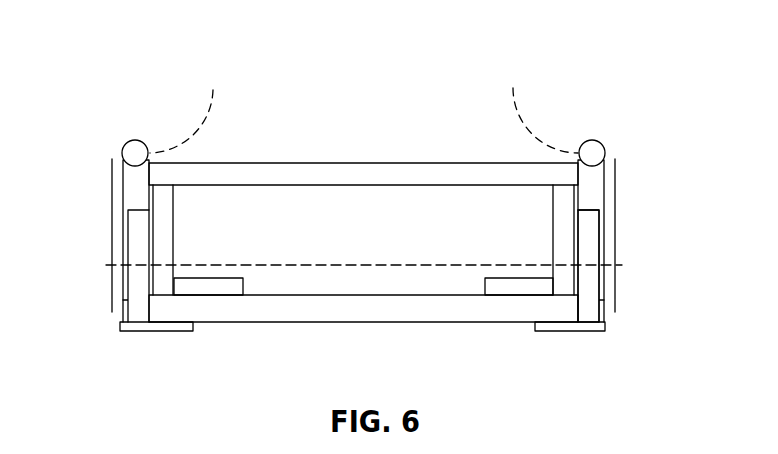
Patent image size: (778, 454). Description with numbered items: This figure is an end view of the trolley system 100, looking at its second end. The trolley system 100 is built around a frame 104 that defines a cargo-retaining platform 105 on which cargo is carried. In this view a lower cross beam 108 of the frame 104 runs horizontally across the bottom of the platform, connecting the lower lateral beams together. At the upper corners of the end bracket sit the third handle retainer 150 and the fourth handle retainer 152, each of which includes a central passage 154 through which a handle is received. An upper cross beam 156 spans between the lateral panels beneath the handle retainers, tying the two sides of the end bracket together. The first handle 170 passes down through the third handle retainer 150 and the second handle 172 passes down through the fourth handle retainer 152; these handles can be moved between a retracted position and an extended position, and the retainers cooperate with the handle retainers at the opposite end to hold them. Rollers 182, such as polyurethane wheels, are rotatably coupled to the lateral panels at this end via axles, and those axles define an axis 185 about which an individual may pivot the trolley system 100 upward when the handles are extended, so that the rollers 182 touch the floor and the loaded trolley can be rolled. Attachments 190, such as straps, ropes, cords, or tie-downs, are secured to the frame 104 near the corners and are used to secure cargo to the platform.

The trolley system 100 is at (186, 52).
The frame 104 is at (227, 329).
The cargo-retaining platform 105 is at (310, 209).
The lower cross beam 108 is at (323, 295).
The third handle retainer 150 is at (123, 149).
The fourth handle retainer 152 is at (604, 149).
The central passage 154 is at (364, 104).
The upper cross beam 156 is at (358, 172).
The first handle 170 is at (138, 140).
The second handle 172 is at (591, 140).
The roller 182 is at (122, 303).
The axis 185 is at (591, 263).
The attachment 190 is at (205, 275).